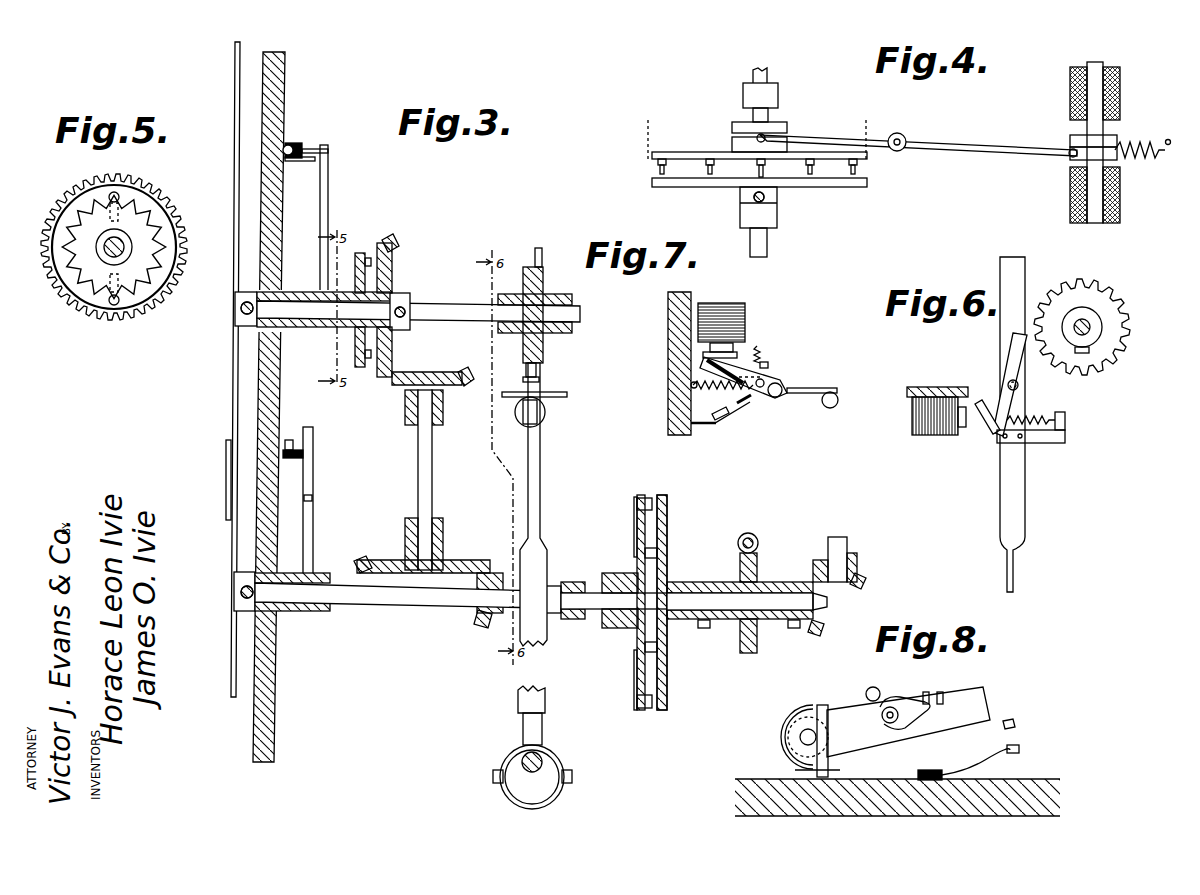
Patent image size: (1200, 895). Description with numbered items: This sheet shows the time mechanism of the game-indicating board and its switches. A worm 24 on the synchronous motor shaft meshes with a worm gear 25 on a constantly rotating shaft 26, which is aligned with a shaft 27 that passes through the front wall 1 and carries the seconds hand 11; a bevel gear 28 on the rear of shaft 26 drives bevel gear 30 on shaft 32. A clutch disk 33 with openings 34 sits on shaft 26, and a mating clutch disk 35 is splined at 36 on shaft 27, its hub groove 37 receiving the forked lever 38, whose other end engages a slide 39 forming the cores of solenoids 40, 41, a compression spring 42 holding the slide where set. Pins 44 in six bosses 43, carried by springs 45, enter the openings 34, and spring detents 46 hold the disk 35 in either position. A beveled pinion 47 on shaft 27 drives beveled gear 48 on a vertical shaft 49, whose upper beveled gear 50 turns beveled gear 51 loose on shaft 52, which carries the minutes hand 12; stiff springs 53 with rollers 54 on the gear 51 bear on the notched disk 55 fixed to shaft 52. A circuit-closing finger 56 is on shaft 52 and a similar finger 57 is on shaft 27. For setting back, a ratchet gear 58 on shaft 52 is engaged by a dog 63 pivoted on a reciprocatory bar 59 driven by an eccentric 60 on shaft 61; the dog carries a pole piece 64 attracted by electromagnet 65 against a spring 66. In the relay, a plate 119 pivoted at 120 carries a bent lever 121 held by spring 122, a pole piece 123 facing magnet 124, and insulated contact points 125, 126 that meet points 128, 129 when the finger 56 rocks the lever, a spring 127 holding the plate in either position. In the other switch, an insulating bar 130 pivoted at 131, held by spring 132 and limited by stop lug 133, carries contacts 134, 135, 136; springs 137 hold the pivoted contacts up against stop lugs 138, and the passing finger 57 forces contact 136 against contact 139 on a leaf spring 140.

In FIG. 3, the front wall 1 is at (286, 84).
In FIG. 8, the front wall 1 is at (755, 779).
In FIG. 3, the seconds hand 11 is at (232, 643).
In FIG. 3, the minutes hand 12 is at (233, 150).
In FIG. 3, the worm 24 is at (759, 540).
In FIG. 3, the worm gear 25 is at (757, 642).
In FIG. 3, the shaft 26 is at (771, 598).
In FIG. 4, the shaft 26 is at (768, 247).
In FIG. 3, the shaft 27 is at (374, 606).
In FIG. 4, the shaft 27 is at (768, 76).
In FIG. 3, the bevel gear 28 is at (824, 629).
In FIG. 3, the bevel gear 30 is at (866, 578).
In FIG. 3, the shaft 32 is at (848, 545).
In FIG. 3, the clutch disk 33 is at (667, 690).
In FIG. 4, the clutch disk 33 is at (834, 188).
In FIG. 3, the openings 34 is at (667, 508).
In FIG. 3, the mating clutch disk 35 is at (638, 640).
In FIG. 4, the mating clutch disk 35 is at (687, 152).
In FIG. 3, the spline 36 is at (596, 586).
In FIG. 3, the annular groove 37 is at (620, 573).
In FIG. 4, the annular groove 37 is at (733, 131).
In FIG. 3, the lever 38 is at (612, 622).
In FIG. 4, the lever 38 is at (938, 139).
In FIG. 4, the slide 39 is at (1078, 147).
In FIG. 4, the solenoid 40 is at (1120, 95).
In FIG. 4, the solenoid 41 is at (1120, 201).
In FIG. 4, the compression spring 42 is at (1140, 150).
In FIG. 3, the bosses 43 is at (657, 551).
In FIG. 4, the bosses 43 is at (706, 170).
In FIG. 3, the pins 44 is at (657, 648).
In FIG. 4, the pins 44 is at (810, 188).
In FIG. 3, the springs 45 is at (634, 522).
In FIG. 3, the spring detents 46 is at (638, 490).
In FIG. 4, the spring detents 46 is at (648, 132).
In FIG. 3, the beveled pinion 47 is at (480, 620).
In FIG. 3, the beveled gear 48 is at (380, 560).
In FIG. 3, the vertical shaft 49 is at (432, 470).
In FIG. 3, the beveled gear 50 is at (447, 377).
In FIG. 3, the beveled gear 51 is at (398, 250).
In FIG. 5, the beveled gear 51 is at (137, 307).
In FIG. 3, the shaft 52 is at (458, 305).
In FIG. 5, the shaft 52 is at (106, 240).
In FIG. 6, the shaft 52 is at (1086, 318).
In FIG. 3, the stiff springs 53 is at (383, 244).
In FIG. 3, the rollers 54 is at (358, 253).
In FIG. 5, the rollers 54 is at (120, 195).
In FIG. 3, the notched disk 55 is at (355, 346).
In FIG. 5, the notched disk 55 is at (172, 236).
In FIG. 3, the circuit-closing finger 56 is at (329, 175).
In FIG. 7, the circuit-closing finger 56 is at (834, 406).
In FIG. 3, the circuit-closing finger 57 is at (313, 498).
In FIG. 8, the circuit-closing finger 57 is at (866, 692).
In FIG. 3, the ratchet gear 58 is at (545, 300).
In FIG. 6, the ratchet gear 58 is at (1098, 372).
In FIG. 3, the reciprocatory bar 59 is at (541, 470).
In FIG. 6, the reciprocatory bar 59 is at (1018, 480).
In FIG. 3, the eccentric 60 is at (560, 790).
In FIG. 3, the shaft 61 is at (522, 758).
In FIG. 3, the dog 63 is at (526, 382).
In FIG. 6, the dog 63 is at (1010, 357).
In FIG. 3, the pole piece 64 is at (527, 420).
In FIG. 6, the pole piece 64 is at (990, 438).
In FIG. 3, the electromagnet 65 is at (546, 414).
In FIG. 6, the electromagnet 65 is at (925, 437).
In FIG. 6, the spring 66 is at (1032, 420).
In FIG. 7, the plate 119 is at (742, 358).
In FIG. 7, the pivot 120 is at (775, 384).
In FIG. 3, the bent lever 121 is at (326, 148).
In FIG. 7, the bent lever 121 is at (820, 388).
In FIG. 7, the spring 122 is at (768, 366).
In FIG. 7, the pole piece 123 is at (703, 355).
In FIG. 3, the magnet 124 is at (290, 143).
In FIG. 7, the magnet 124 is at (745, 306).
In FIG. 7, the contact point 125 is at (692, 382).
In FIG. 7, the contact point 126 is at (768, 398).
In FIG. 7, the spring 127 is at (700, 391).
In FIG. 7, the contact point 128 is at (726, 416).
In FIG. 7, the contact point 129 is at (752, 410).
In FIG. 3, the insulating bar 130 is at (304, 436).
In FIG. 8, the insulating bar 130 is at (985, 692).
In FIG. 8, the pivot 131 is at (790, 722).
In FIG. 8, the spring 132 is at (796, 750).
In FIG. 8, the stop lug 133 is at (820, 705).
In FIG. 8, the contact 134 is at (923, 695).
In FIG. 8, the contact 135 is at (937, 698).
In FIG. 8, the contact 136 is at (1015, 724).
In FIG. 8, the springs 137 is at (882, 717).
In FIG. 8, the stop lugs 138 is at (905, 700).
In FIG. 8, the contact 139 is at (1020, 750).
In FIG. 8, the leaf spring 140 is at (990, 775).